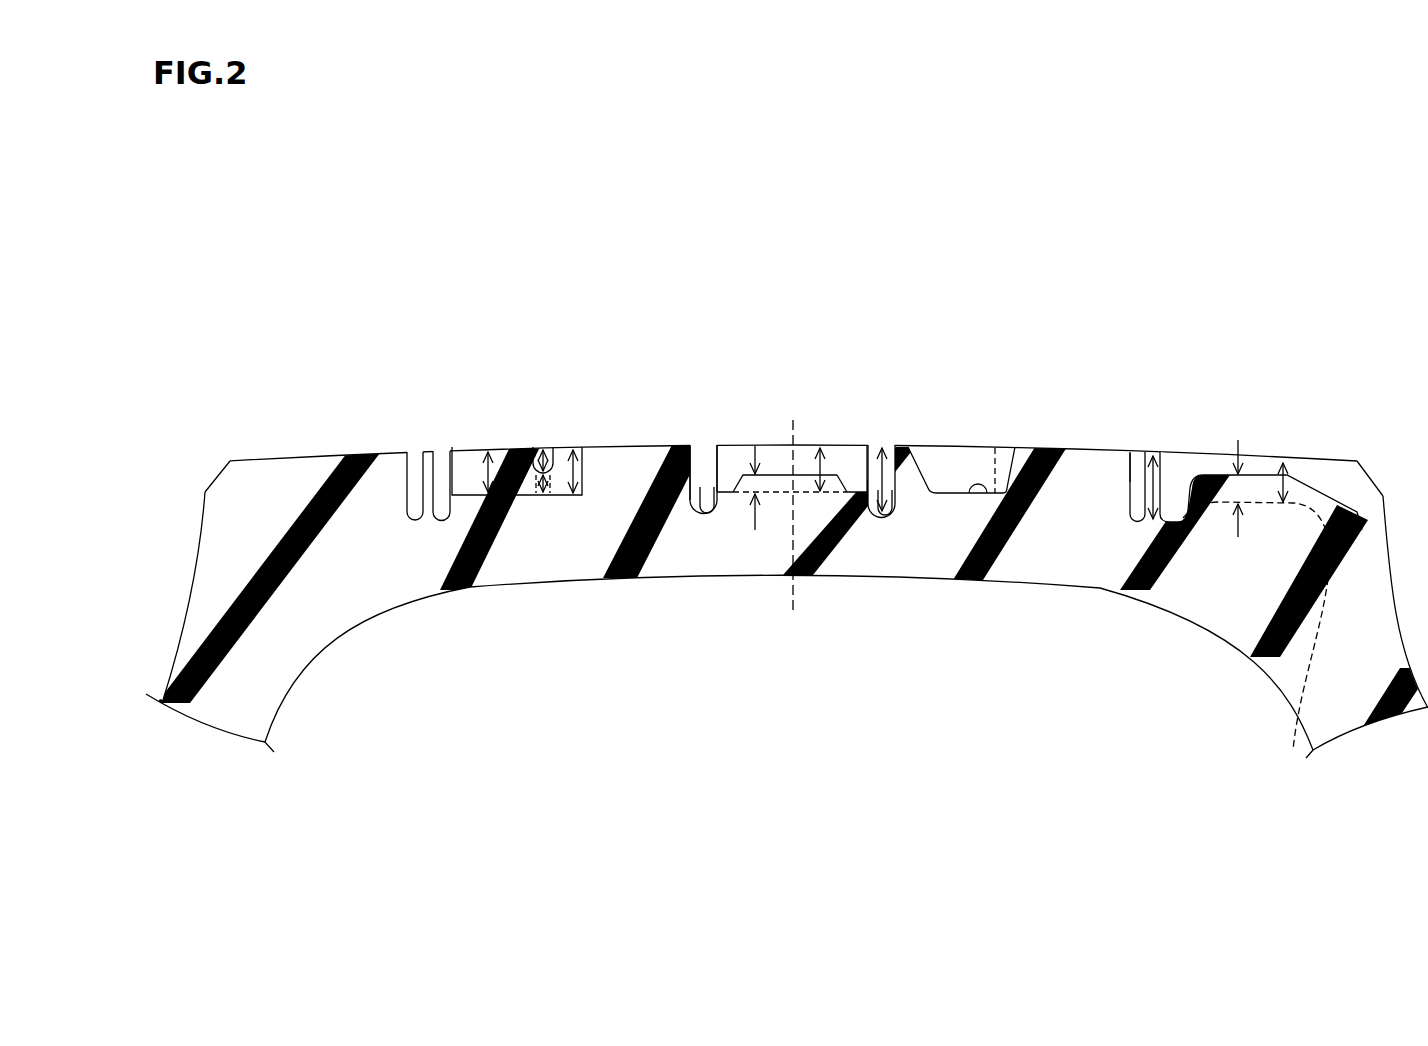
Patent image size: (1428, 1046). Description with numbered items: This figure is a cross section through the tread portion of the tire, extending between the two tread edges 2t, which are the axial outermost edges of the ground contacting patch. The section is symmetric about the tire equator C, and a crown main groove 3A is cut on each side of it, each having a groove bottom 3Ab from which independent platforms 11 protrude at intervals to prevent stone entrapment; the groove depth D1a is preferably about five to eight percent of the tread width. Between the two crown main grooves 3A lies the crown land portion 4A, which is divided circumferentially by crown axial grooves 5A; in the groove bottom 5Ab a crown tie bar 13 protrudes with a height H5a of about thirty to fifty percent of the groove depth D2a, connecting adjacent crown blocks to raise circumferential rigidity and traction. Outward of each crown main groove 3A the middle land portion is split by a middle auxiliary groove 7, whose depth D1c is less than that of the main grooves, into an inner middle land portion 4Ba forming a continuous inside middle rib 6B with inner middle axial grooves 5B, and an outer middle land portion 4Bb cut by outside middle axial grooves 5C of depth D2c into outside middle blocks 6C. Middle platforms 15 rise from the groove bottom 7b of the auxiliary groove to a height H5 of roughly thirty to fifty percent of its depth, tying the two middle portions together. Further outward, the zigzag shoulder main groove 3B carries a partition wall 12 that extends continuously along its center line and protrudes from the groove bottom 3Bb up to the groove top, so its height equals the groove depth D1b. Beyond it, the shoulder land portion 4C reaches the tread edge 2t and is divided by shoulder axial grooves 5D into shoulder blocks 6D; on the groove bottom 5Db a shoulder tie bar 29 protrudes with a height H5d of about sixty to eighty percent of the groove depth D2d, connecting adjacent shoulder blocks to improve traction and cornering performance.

The tread edge 2t is at (230, 457).
The shoulder land portion 4C is at (793, 356).
The shoulder block 6D is at (297, 452).
The outer middle land portion 4Bb is at (791, 351).
The outside middle block 6C is at (508, 443).
The inner middle land portion 4Ba is at (801, 349).
The inside middle rib 6B is at (642, 443).
The crown land portion 4A is at (792, 348).
The shoulder main groove 3B is at (418, 457).
The groove bottom 3Bb is at (1140, 522).
The partition wall 12 is at (1123, 457).
The depth D1b is at (1137, 487).
The crown main groove 3A is at (700, 458).
The groove bottom 3Ab is at (705, 514).
The depth D1c is at (692, 515).
The depth D1a is at (890, 520).
The platform 11 is at (720, 485).
The crown axial groove 5A is at (836, 458).
The groove bottom 5Ab is at (770, 492).
The crown tie bar 13 is at (845, 493).
The groove depth D2a is at (820, 495).
The protruding height H5a is at (754, 532).
The tire equator C is at (791, 501).
The inner middle axial groove 5B is at (975, 497).
The middle auxiliary groove 7 is at (548, 443).
The middle platform 15 is at (532, 472).
The groove bottom 7b is at (545, 495).
The outside middle axial groove 5C is at (477, 497).
The depth D2c is at (485, 452).
The protruding height H5 is at (576, 497).
The shoulder tie bar 29 is at (1222, 457).
The shoulder axial groove 5D is at (1272, 633).
The bottom 5Db is at (1272, 612).
The depth D2d is at (1238, 540).
The protruding height H5d is at (1215, 480).